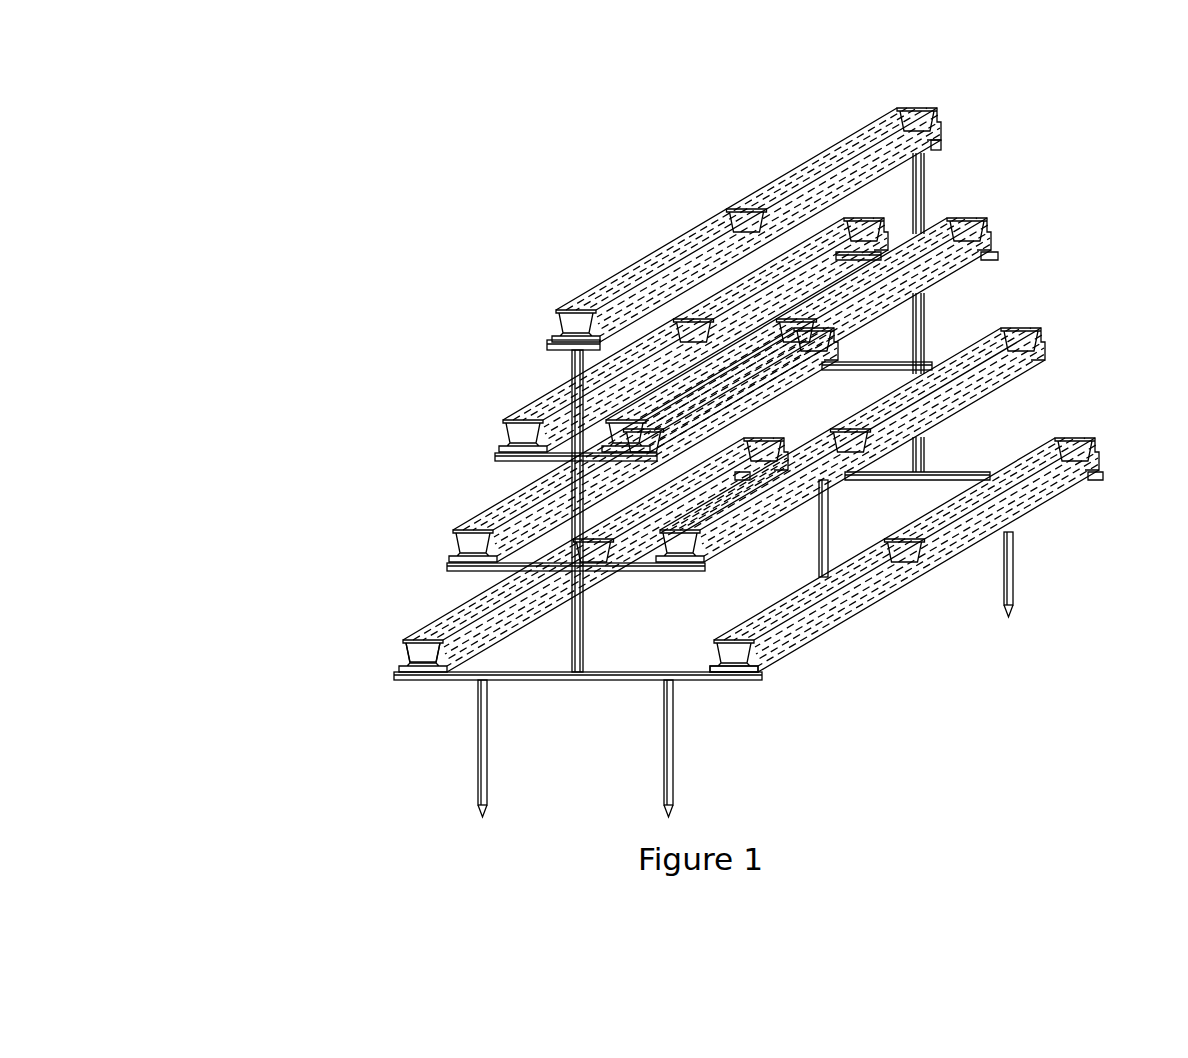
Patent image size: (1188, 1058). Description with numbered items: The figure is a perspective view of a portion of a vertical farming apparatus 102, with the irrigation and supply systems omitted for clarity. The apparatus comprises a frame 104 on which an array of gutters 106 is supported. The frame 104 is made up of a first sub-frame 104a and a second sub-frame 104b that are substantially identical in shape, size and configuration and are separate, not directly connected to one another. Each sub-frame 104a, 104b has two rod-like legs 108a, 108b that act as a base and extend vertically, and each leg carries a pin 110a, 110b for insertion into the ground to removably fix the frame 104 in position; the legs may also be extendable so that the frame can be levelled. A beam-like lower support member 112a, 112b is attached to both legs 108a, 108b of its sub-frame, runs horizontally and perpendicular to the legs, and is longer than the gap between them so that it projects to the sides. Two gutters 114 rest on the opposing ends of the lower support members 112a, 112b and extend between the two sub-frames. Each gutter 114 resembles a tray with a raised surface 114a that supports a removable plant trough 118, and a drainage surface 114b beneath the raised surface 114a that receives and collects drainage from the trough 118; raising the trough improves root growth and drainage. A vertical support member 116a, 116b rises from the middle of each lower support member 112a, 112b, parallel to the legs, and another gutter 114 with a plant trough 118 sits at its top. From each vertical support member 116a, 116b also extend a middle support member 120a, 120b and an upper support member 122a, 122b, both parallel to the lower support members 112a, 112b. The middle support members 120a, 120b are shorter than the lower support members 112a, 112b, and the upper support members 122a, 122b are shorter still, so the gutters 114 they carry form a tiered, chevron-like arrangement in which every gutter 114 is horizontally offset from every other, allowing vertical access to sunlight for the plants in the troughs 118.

The vertical farming apparatus 102 is at (685, 441).
The frame 104 is at (685, 478).
The first sub-frame 104a is at (555, 575).
The second sub-frame 104b is at (961, 378).
The array of gutters 106 is at (675, 384).
The leg 108a is at (465, 748).
The leg 108b is at (678, 748).
The pin 110a is at (524, 794).
The pin 110b is at (668, 810).
The lower support member 112a is at (393, 675).
The lower support member 112b is at (1093, 483).
The gutter 114 is at (520, 555).
The raised surface 114a is at (904, 570).
The drainage surface 114b is at (760, 677).
The vertical support member 116a is at (573, 363).
The vertical support member 116b is at (924, 172).
The plant trough 118 is at (413, 652).
The middle support member 120a is at (447, 563).
The middle support member 120b is at (1047, 368).
The upper support member 122a is at (503, 455).
The upper support member 122b is at (997, 257).